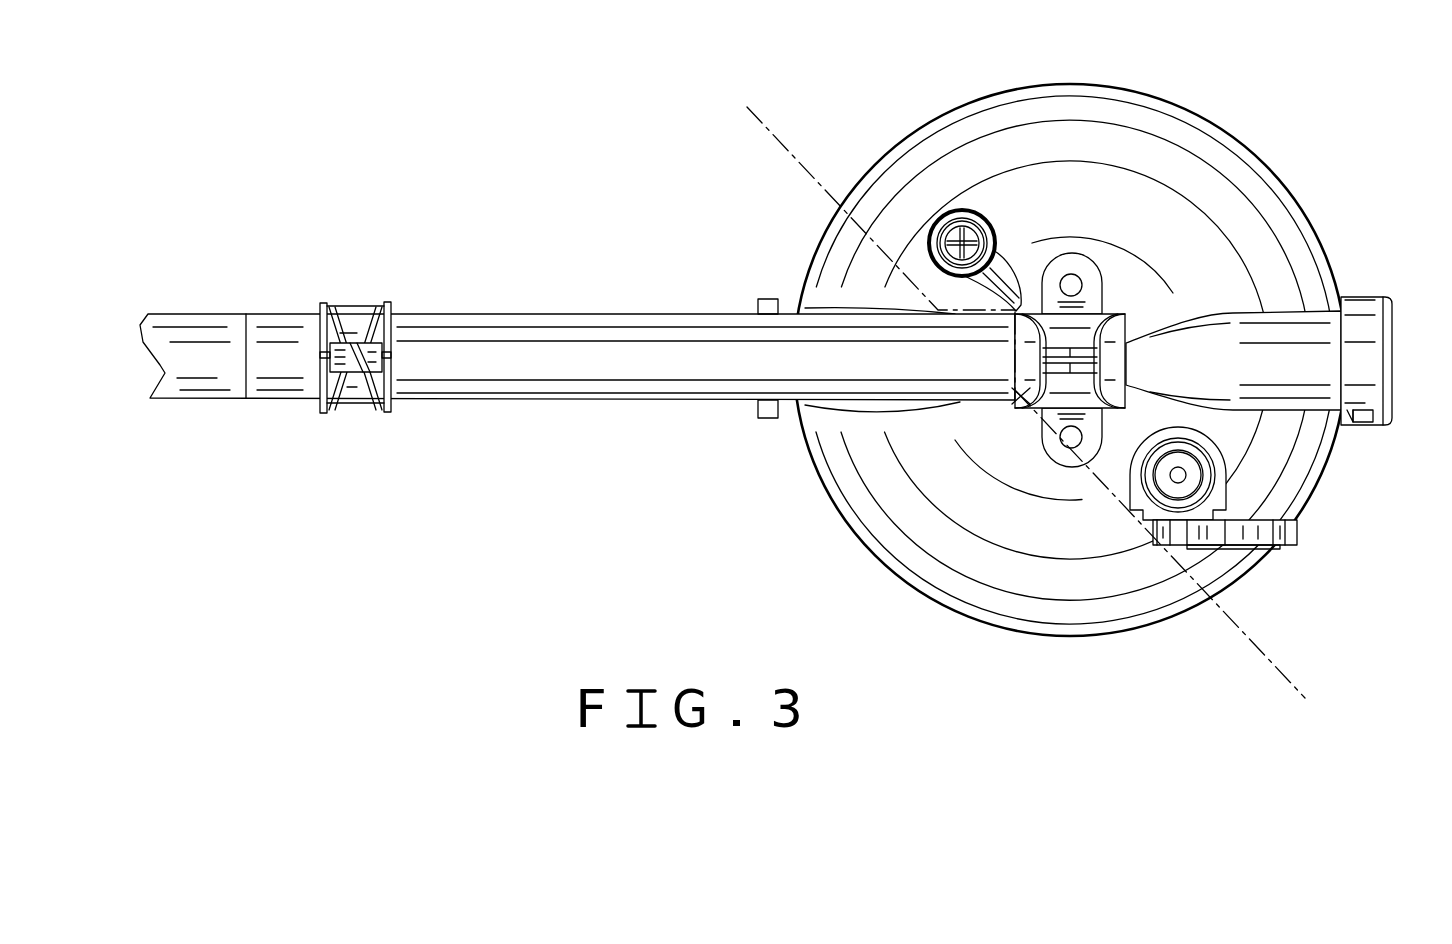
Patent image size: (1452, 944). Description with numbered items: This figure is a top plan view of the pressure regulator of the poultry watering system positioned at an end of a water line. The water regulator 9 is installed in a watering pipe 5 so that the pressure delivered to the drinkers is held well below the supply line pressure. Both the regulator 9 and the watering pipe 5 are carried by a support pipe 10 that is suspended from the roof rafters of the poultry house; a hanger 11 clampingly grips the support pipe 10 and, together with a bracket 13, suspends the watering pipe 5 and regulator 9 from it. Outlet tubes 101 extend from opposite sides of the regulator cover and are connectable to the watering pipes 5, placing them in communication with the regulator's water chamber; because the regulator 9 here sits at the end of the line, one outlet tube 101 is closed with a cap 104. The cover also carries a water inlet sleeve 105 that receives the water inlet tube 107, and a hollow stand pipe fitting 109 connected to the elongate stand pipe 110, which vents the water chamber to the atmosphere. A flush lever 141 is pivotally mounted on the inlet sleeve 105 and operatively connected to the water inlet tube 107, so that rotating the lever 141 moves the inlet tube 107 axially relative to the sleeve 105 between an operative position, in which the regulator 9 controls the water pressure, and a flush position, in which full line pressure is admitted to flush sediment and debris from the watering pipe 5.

The watering pipe 5 is at (1355, 666).
The water regulator 9 is at (1238, 113).
The support pipe 10 is at (541, 314).
The hanger 11 is at (393, 304).
The bracket 13 is at (1118, 310).
The outlet tube 101 is at (1290, 315).
The cap 104 is at (1392, 325).
The water inlet sleeve 105 is at (1230, 482).
The water inlet tube 107 is at (1240, 448).
The stand pipe fitting 109 is at (996, 229).
The stand pipe 110 is at (937, 212).
The flush lever 141 is at (1297, 533).